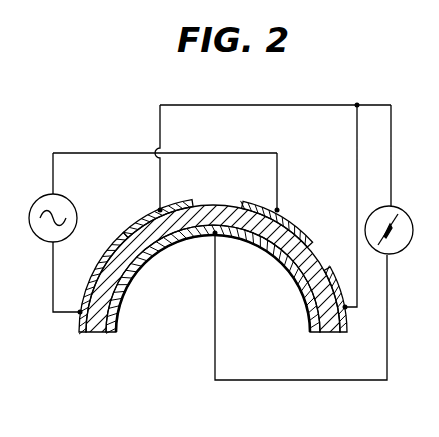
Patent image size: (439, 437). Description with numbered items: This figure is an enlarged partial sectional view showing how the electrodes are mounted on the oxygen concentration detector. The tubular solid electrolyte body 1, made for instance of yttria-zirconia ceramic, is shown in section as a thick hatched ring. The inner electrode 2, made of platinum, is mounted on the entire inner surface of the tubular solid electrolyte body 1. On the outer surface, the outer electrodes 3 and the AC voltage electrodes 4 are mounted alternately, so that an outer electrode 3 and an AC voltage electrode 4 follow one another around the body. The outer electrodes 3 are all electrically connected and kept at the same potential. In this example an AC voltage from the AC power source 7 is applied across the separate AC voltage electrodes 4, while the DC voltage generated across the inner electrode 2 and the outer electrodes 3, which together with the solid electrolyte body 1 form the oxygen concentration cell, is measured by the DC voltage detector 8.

The tubular solid electrolyte body 1 is at (104, 323).
The inner electrode 2 is at (132, 283).
The outer electrodes 3 is at (173, 203).
The AC voltage electrodes 4 is at (86, 297).
The AC power source 7 is at (77, 216).
The DC voltage detector 8 is at (413, 225).